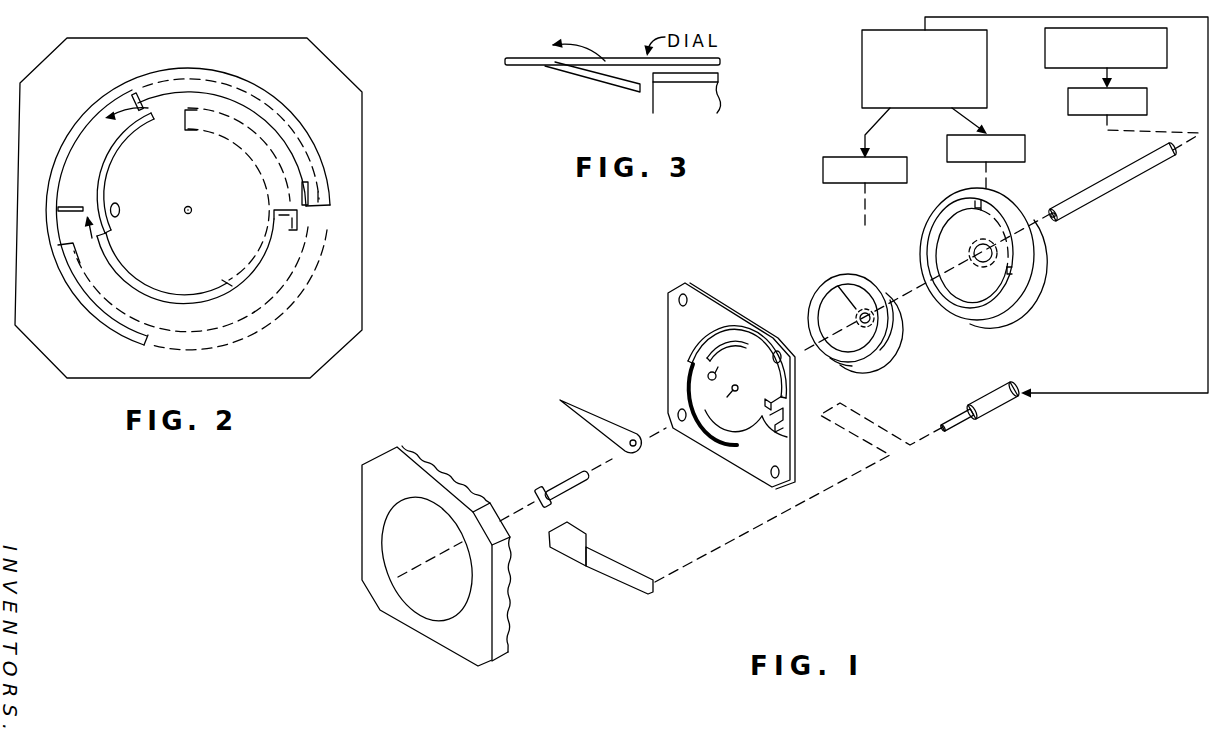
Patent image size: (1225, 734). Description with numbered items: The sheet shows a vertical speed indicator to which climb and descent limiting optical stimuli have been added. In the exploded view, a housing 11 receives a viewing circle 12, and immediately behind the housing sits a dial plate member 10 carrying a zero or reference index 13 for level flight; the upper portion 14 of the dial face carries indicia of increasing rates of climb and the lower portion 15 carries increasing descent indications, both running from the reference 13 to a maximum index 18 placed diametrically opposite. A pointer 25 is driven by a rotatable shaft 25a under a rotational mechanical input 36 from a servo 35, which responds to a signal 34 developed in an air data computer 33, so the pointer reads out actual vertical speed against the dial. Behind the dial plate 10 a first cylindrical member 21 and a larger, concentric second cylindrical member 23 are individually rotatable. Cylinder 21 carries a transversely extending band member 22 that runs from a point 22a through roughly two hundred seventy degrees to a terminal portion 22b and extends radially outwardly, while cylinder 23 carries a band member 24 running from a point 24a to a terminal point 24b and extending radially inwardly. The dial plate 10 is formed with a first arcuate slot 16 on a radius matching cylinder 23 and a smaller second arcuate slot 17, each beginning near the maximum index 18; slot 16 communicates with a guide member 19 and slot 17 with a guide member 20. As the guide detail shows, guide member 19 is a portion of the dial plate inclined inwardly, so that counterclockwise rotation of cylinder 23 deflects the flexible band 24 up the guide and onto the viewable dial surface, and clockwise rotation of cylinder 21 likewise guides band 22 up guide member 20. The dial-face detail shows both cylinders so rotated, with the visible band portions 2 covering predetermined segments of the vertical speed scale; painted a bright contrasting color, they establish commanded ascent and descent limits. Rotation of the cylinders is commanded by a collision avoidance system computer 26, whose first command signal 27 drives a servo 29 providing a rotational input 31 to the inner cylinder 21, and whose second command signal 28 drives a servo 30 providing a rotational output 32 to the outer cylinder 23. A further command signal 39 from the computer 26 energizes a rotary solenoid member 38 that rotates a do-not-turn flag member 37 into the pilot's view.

In FIG. 2, the indicator band 2 is at (131, 200).
In FIG. 2, the dial plate member 10 is at (317, 70).
In FIG. 3, the dial plate member 10 is at (514, 67).
In FIG. 1, the dial plate member 10 is at (697, 440).
In FIG. 1, the housing 11 is at (373, 472).
In FIG. 1, the viewing circle 12 is at (395, 580).
In FIG. 1, the zero or reference index 13 is at (726, 367).
In FIG. 1, the upper portion of the dial face 14 is at (745, 368).
In FIG. 1, the lower portion of the dial face 15 is at (747, 425).
In FIG. 2, the first arcuate slot 16 is at (115, 92).
In FIG. 1, the first arcuate slot 16 is at (720, 327).
In FIG. 2, the second arcuate slot 17 is at (75, 205).
In FIG. 1, the second arcuate slot 17 is at (688, 370).
In FIG. 2, the maximum index 18 is at (256, 213).
In FIG. 1, the maximum index 18 is at (787, 437).
In FIG. 2, the guide member 19 is at (302, 193).
In FIG. 3, the guide member 19 is at (597, 79).
In FIG. 1, the guide member 19 is at (782, 398).
In FIG. 2, the guide member 20 is at (296, 222).
In FIG. 1, the guide member 20 is at (785, 420).
In FIG. 2, the first cylindrical member 21 is at (227, 283).
In FIG. 1, the first cylindrical member 21 is at (888, 352).
In FIG. 2, the transversely extending band member 22 is at (198, 290).
In FIG. 1, the transversely extending band member 22 is at (833, 280).
In FIG. 1, the initial point of band member 22 22a is at (895, 336).
In FIG. 1, the terminal portion of band member 22 22b is at (853, 368).
In FIG. 2, the second cylindrical member 23 is at (322, 167).
In FIG. 3, the second cylindrical member 23 is at (718, 100).
In FIG. 1, the second cylindrical member 23 is at (1035, 252).
In FIG. 2, the transversely extending band member 24 is at (297, 137).
In FIG. 3, the transversely extending band member 24 is at (722, 76).
In FIG. 1, the transversely extending band member 24 is at (1010, 276).
In FIG. 1, the initial point of band member 24 24a is at (1030, 268).
In FIG. 1, the terminal point of band member 24 24b is at (973, 193).
In FIG. 1, the pointer 25 is at (597, 428).
In FIG. 1, the rotatable shaft 25a is at (1147, 167).
In FIG. 1, the collision avoidance system computer 26 is at (862, 53).
In FIG. 1, the first command signal 27 is at (877, 121).
In FIG. 1, the second command signal 28 is at (987, 122).
In FIG. 1, the servo 29 is at (823, 172).
In FIG. 1, the servo 30 is at (1025, 158).
In FIG. 1, the rotational input 31 is at (862, 230).
In FIG. 1, the rotational output 32 is at (988, 177).
In FIG. 1, the air data computer 33 is at (1045, 34).
In FIG. 1, the signal 34 is at (1112, 77).
In FIG. 1, the servo 35 is at (1147, 106).
In FIG. 1, the rotational mechanical input 36 is at (1120, 134).
In FIG. 1, the flag member 37 is at (617, 577).
In FIG. 1, the rotary solenoid member 38 is at (993, 415).
In FIG. 1, the command signal 39 is at (1208, 355).